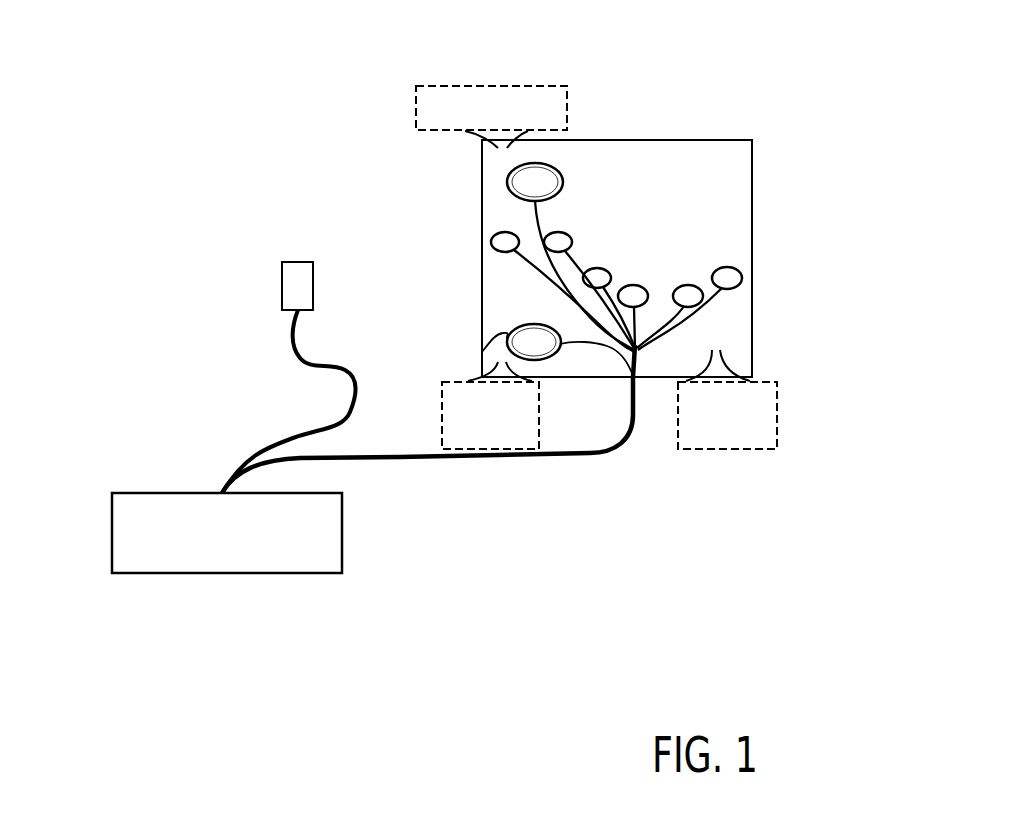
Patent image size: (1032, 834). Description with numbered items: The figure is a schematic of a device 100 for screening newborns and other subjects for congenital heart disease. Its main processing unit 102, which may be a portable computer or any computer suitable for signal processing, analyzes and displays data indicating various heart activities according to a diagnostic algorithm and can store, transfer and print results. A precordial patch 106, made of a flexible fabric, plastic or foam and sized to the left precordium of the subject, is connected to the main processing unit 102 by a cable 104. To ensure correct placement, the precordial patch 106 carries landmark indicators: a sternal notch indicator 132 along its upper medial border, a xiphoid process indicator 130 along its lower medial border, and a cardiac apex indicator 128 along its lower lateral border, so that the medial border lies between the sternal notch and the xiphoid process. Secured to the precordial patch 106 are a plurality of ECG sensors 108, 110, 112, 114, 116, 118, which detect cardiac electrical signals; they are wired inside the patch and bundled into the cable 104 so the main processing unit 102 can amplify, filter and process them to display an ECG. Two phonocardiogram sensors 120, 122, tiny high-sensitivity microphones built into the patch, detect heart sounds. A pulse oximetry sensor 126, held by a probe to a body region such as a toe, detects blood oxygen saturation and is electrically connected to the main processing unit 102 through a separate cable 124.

The device 100 is at (815, 98).
The main processing unit 102 is at (112, 534).
The cable 104 is at (583, 456).
The precordial patch 106 is at (753, 232).
The ECG sensor 108 is at (742, 280).
The ECG sensor 110 is at (689, 285).
The ECG sensor 112 is at (634, 285).
The ECG sensor 114 is at (597, 268).
The ECG sensor 116 is at (563, 234).
The ECG sensor 118 is at (494, 234).
The phonocardiogram sensor 120 is at (542, 182).
The phonocardiogram sensor 122 is at (507, 338).
The cable 124 is at (286, 333).
The pulse oximetry sensor 126 is at (282, 280).
The cardiac apex indicator 128 is at (778, 399).
The xiphoid process indicator 130 is at (442, 400).
The sternal notch indicator 132 is at (461, 86).